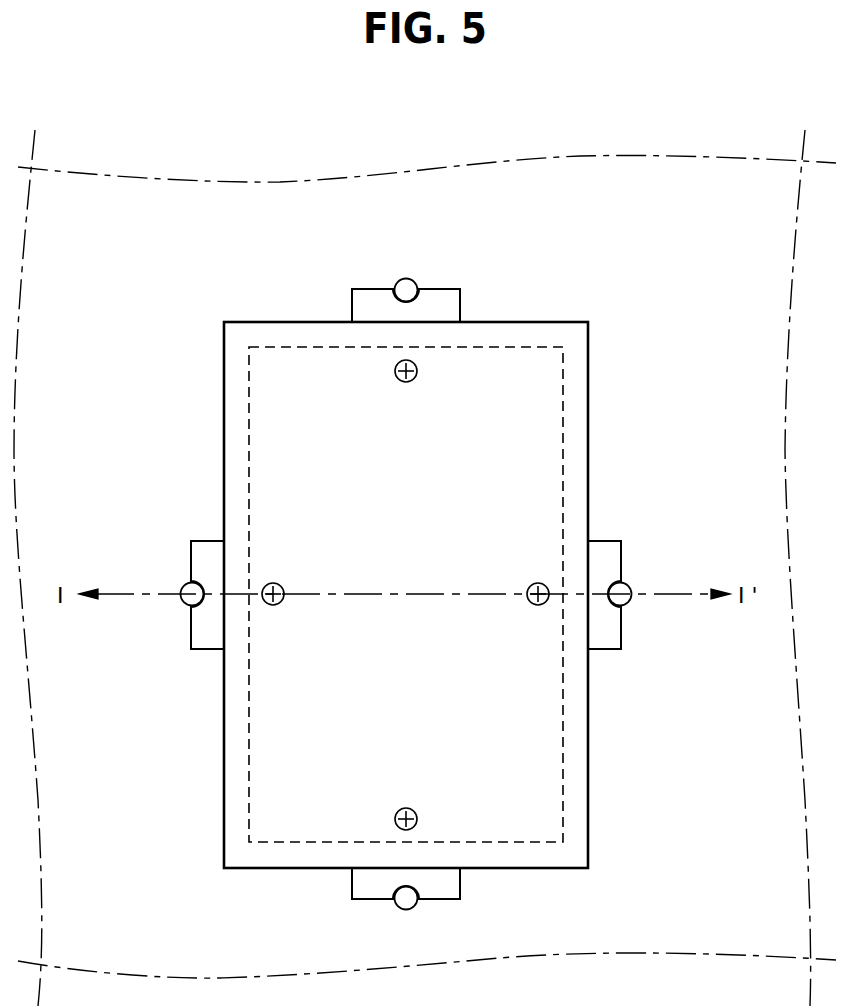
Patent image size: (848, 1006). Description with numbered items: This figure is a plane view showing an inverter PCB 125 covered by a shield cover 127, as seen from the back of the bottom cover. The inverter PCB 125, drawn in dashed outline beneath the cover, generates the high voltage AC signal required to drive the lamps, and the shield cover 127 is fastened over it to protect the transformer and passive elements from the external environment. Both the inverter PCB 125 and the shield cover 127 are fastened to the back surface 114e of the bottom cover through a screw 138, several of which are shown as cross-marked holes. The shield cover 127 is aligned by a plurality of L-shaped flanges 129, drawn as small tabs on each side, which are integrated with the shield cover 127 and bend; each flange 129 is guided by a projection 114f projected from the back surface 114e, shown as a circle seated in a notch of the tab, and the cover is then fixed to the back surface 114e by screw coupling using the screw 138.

The back surface 114e is at (677, 247).
The projection 114f is at (406, 283).
The inverter PCB 125 is at (563, 386).
The shield cover 127 is at (588, 441).
The L-shaped flange 129 is at (612, 629).
The screw 138 is at (538, 606).